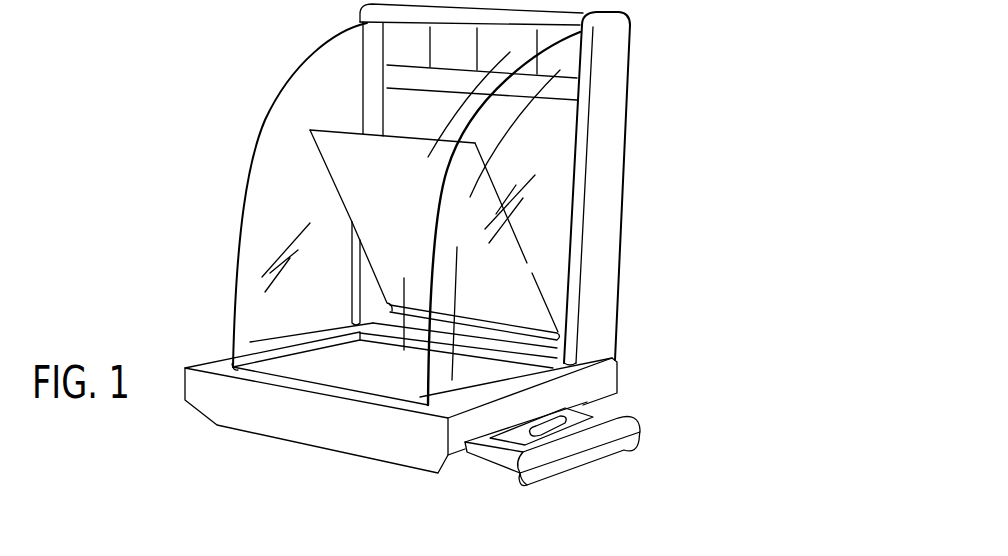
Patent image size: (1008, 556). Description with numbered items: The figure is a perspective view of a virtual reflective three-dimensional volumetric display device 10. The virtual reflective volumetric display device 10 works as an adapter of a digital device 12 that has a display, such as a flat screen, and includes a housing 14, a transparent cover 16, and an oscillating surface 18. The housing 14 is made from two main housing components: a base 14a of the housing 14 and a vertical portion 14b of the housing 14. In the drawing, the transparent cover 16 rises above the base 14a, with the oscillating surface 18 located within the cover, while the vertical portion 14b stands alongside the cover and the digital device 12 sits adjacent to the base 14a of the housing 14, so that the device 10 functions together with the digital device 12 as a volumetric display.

The virtual reflective 3D volumetric display device 10 is at (196, 88).
The digital device 12 is at (630, 417).
The housing 14 is at (634, 188).
The base 14a is at (618, 372).
The vertical portion 14b is at (622, 78).
The transparent cover 16 is at (312, 50).
The oscillating surface 18 is at (337, 158).